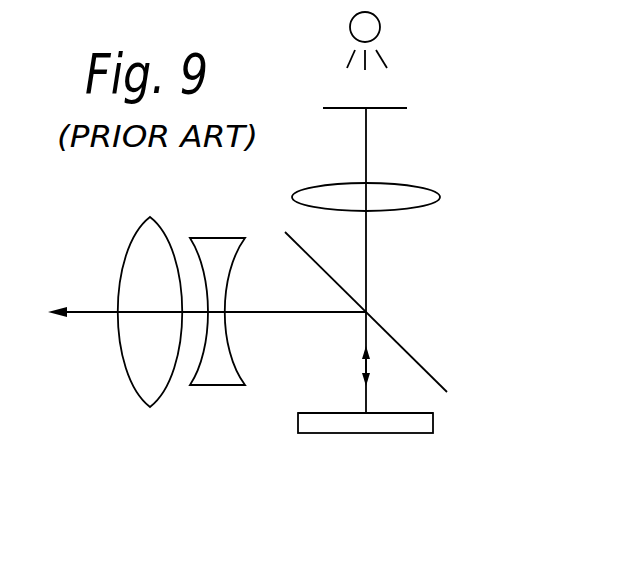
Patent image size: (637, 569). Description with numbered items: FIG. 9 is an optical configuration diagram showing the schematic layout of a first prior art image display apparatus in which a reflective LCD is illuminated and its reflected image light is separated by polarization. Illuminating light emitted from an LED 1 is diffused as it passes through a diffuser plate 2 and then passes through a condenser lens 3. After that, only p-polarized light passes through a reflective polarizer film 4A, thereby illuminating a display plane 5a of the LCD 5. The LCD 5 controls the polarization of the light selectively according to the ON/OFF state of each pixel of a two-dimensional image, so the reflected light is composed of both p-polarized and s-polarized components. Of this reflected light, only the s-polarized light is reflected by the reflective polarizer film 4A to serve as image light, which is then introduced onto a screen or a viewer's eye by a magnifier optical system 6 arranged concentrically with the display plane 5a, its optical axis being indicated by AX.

The LED 1 is at (380, 25).
The diffuser plate 2 is at (392, 107).
The condenser lens 3 is at (440, 197).
The reflective polarizer film 4A is at (403, 348).
The LCD 5 is at (377, 433).
The display plane 5a is at (420, 413).
The magnifier optical system 6 is at (250, 413).
The optical axis AX is at (90, 314).